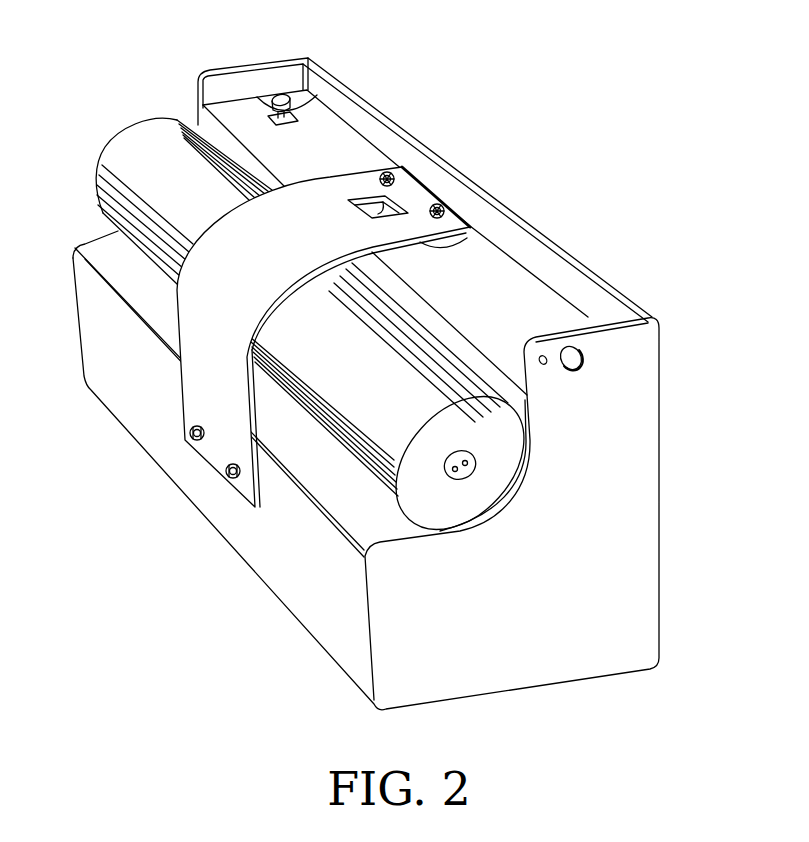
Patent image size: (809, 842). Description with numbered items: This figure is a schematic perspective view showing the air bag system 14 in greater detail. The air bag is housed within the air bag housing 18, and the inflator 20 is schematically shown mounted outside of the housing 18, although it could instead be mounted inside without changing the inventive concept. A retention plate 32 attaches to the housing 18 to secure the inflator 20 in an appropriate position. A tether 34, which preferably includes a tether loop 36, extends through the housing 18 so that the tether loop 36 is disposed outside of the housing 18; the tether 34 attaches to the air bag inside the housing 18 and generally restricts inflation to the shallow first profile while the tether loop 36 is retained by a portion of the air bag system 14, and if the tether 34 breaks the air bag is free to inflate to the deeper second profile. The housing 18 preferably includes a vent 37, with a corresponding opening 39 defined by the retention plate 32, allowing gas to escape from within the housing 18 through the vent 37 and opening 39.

The air bag system 14 is at (688, 262).
The air bag housing 18 is at (661, 496).
The inflator 20 is at (108, 152).
The retention plate 32 is at (382, 293).
The tether 34 is at (333, 73).
The tether loop 36 is at (270, 100).
The vent 37 is at (392, 176).
The opening 39 is at (377, 207).